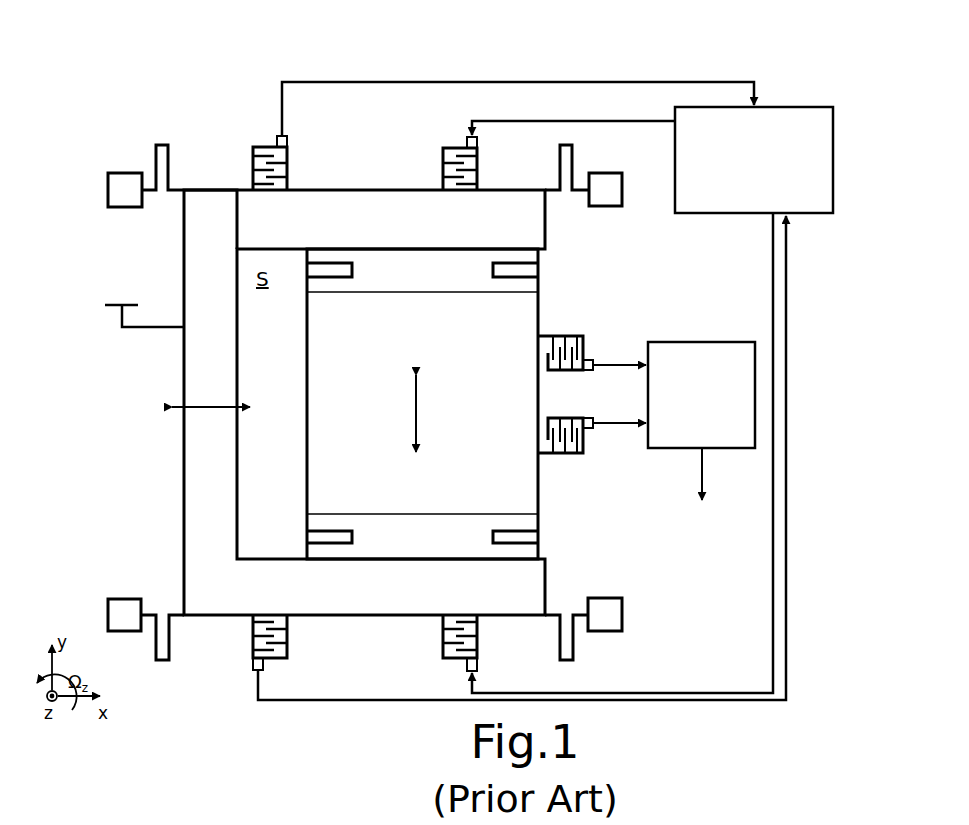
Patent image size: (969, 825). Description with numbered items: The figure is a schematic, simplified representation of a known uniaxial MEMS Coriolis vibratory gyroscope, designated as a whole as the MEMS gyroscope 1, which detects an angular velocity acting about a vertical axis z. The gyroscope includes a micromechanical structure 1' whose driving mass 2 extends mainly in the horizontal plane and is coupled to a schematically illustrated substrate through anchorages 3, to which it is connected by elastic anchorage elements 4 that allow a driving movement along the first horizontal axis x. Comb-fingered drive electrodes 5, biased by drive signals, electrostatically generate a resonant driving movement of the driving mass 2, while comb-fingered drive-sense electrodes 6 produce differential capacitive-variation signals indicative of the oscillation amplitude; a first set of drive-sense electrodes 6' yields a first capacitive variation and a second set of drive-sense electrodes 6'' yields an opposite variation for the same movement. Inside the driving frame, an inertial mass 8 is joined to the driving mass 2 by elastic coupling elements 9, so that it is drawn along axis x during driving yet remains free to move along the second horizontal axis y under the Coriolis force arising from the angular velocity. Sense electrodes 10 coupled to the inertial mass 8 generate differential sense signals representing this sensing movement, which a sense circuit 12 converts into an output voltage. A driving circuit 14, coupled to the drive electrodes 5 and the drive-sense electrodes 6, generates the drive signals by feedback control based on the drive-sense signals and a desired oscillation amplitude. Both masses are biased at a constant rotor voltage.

The MEMS gyroscope 1 is at (93, 21).
The micromechanical structure 1' is at (210, 146).
The driving mass 2 is at (190, 452).
The anchorages 3 is at (118, 178).
The elastic anchorage elements 4 is at (160, 143).
The drive electrodes 5 is at (487, 157).
The drive-sense electrodes 6 is at (493, 384).
The first set of drive-sense electrodes 6' is at (503, 124).
The second set of drive-sense electrodes 6'' is at (493, 476).
The inertial mass 8 is at (316, 457).
The elastic coupling elements 9 is at (352, 270).
The sense electrodes 10 is at (574, 330).
The sense circuit 12 is at (674, 340).
The driving circuit 14 is at (808, 112).